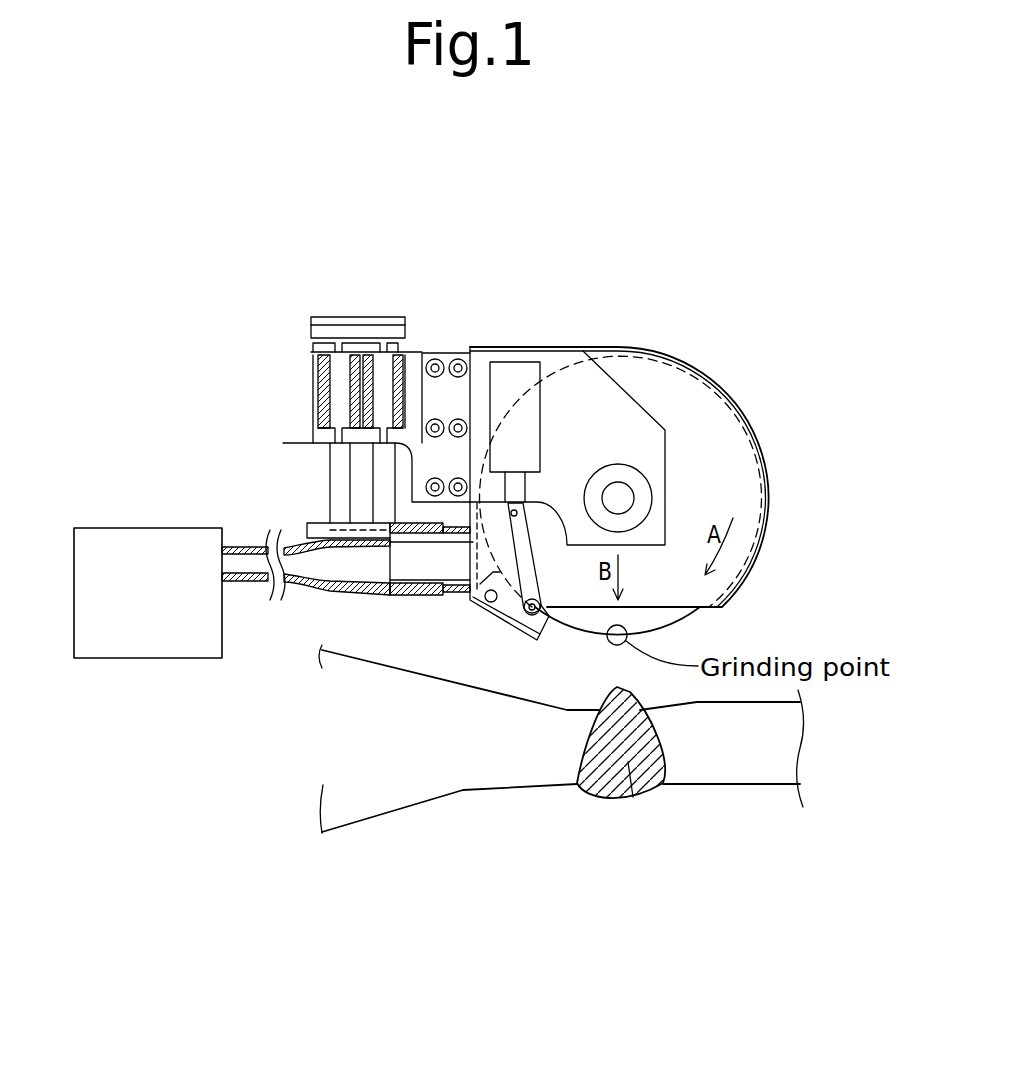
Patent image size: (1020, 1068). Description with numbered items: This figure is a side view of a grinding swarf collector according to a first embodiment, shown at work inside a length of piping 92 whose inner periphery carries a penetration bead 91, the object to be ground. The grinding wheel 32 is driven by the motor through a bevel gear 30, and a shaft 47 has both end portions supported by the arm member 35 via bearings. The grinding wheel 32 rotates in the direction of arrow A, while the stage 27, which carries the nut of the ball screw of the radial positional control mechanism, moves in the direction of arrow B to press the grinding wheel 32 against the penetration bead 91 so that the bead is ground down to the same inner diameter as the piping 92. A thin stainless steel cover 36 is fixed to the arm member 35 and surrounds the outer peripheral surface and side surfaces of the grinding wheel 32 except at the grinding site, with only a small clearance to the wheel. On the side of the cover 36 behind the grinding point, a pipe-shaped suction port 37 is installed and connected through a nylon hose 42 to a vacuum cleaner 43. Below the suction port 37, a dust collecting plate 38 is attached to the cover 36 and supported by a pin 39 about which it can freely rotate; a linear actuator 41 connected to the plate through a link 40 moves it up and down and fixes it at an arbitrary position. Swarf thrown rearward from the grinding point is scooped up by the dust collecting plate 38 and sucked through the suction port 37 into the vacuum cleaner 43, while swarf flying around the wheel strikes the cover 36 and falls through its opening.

The stage 27 is at (413, 352).
The linear actuator 41 is at (505, 378).
The arm member 35 is at (588, 405).
The cover 36 is at (700, 370).
The bevel gear 30 is at (638, 470).
The shaft 47 is at (618, 502).
The grinding wheel 32 is at (683, 612).
The vacuum cleaner 43 is at (100, 528).
The hose 42 is at (252, 548).
The suction port 37 is at (449, 566).
The dust collecting plate 38 is at (491, 604).
The link 40 is at (540, 625).
The pin 39 is at (530, 614).
The piping 92 is at (408, 767).
The penetration bead 91 is at (638, 795).